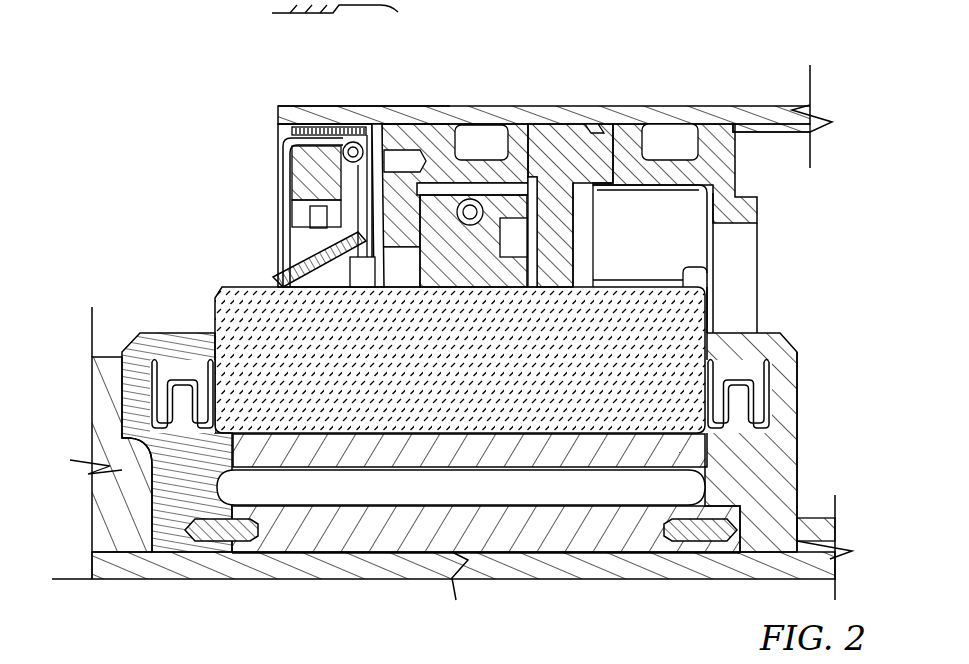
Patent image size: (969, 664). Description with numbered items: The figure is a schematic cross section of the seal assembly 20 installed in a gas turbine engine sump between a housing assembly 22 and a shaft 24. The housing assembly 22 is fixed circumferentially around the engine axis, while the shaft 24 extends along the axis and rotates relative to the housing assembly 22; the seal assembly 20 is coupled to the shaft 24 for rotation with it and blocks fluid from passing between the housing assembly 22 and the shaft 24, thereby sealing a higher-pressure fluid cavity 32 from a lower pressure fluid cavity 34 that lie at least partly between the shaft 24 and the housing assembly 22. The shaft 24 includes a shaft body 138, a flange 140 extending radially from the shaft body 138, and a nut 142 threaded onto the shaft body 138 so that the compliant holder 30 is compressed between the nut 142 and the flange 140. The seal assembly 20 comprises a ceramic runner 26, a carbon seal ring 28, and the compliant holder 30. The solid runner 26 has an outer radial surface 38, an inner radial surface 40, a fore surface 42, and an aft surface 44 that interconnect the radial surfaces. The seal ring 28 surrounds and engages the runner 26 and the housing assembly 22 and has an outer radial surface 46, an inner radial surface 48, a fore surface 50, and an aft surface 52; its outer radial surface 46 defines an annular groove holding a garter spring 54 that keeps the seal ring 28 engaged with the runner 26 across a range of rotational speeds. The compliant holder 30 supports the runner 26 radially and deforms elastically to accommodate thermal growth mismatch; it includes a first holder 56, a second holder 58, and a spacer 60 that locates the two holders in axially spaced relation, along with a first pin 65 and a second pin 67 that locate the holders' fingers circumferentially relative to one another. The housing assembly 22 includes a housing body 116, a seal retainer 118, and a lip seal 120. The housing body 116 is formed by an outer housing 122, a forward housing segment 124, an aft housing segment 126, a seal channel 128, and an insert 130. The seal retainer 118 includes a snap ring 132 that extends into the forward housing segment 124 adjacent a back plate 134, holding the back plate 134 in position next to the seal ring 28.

The seal assembly 20 is at (85, 288).
The housing assembly 22 is at (680, 98).
The shaft 24 is at (350, 563).
The runner 26 is at (712, 314).
The seal ring 28 is at (537, 177).
The compliant holder 30 is at (805, 388).
The higher-pressure fluid cavity 32 is at (219, 223).
The lower pressure fluid cavity 34 is at (784, 239).
The outer radial surface 38 is at (683, 270).
The inner radial surface 40 is at (453, 434).
The fore surface 42 is at (213, 303).
The aft surface 44 is at (707, 325).
The outer radial surface 46 is at (470, 198).
The inner radial surface 48 is at (373, 127).
The fore surface 50 is at (417, 186).
The aft surface 52 is at (577, 277).
The garter spring 54 is at (493, 183).
The first holder 56 is at (150, 480).
The second holder 58 is at (758, 447).
The spacer 60 is at (577, 530).
The first pin 65 is at (217, 530).
The second pin 67 is at (697, 513).
The housing body 116 is at (766, 98).
The seal retainer 118 is at (580, 221).
The lip seal 120 is at (350, 212).
The outer housing 122 is at (332, 113).
The forward housing segment 124 is at (590, 133).
The aft housing segment 126 is at (733, 167).
The seal channel 128 is at (310, 132).
The insert 130 is at (297, 150).
The snap ring 132 is at (633, 160).
The back plate 134 is at (566, 124).
The shaft body 138 is at (530, 563).
The flange 140 is at (810, 533).
The nut 142 is at (93, 513).